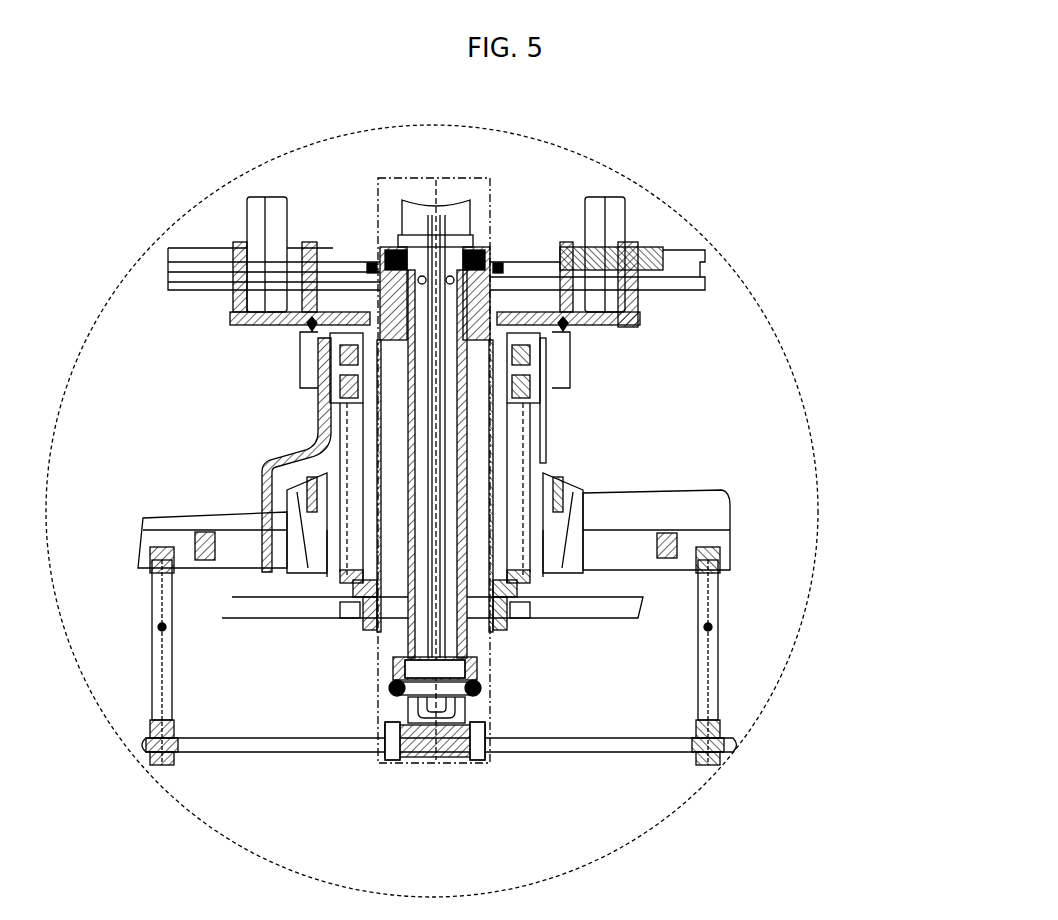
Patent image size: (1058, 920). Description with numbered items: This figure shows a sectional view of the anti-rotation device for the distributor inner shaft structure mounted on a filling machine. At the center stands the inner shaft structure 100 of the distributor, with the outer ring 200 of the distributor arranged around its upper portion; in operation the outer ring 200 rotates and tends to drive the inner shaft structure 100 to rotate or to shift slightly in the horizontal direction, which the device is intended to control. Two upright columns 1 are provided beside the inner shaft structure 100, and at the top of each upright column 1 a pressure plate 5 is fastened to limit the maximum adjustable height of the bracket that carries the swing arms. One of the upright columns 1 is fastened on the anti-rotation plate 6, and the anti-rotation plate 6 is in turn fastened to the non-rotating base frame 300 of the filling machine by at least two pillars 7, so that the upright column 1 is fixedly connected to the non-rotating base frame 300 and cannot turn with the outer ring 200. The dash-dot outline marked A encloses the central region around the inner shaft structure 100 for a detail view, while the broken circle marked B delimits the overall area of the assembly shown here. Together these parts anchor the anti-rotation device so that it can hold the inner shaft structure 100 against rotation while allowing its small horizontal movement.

The upright column 1 is at (408, 703).
The pressure plate 5 is at (405, 664).
The anti-rotation plate 6 is at (272, 738).
The pillar 7 is at (165, 675).
The inner shaft structure 100 is at (462, 640).
The outer ring 200 is at (395, 262).
The non-rotating base frame 300 is at (175, 530).
The detail region A is at (478, 207).
The detail region B is at (742, 433).